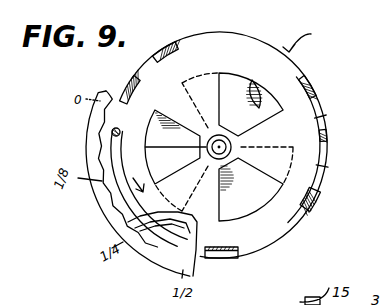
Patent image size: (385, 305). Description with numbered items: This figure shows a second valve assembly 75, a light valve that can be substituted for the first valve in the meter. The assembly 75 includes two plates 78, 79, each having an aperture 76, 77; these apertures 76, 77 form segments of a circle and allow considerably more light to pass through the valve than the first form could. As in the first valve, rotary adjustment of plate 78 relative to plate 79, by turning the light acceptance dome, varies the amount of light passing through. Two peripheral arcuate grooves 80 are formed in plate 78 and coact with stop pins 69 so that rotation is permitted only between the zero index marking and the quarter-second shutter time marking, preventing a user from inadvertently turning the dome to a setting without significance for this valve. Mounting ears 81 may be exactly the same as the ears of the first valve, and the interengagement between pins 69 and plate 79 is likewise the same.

The stop pins 69 is at (330, 134).
The second valve assembly 75 is at (301, 34).
The aperture 76 is at (253, 82).
The aperture 77 is at (250, 82).
The plate 78 is at (226, 33).
The plate 79 is at (271, 106).
The peripheral arcuate grooves 80 is at (327, 113).
The mounting ears 81 is at (319, 206).